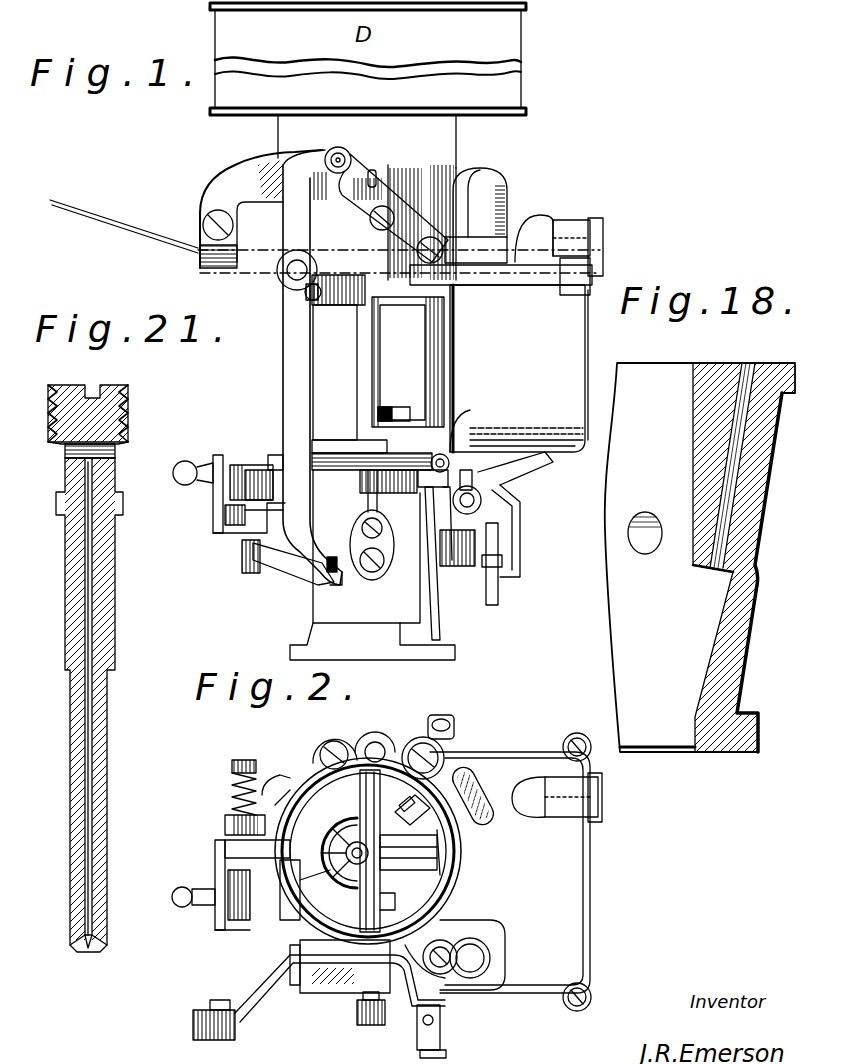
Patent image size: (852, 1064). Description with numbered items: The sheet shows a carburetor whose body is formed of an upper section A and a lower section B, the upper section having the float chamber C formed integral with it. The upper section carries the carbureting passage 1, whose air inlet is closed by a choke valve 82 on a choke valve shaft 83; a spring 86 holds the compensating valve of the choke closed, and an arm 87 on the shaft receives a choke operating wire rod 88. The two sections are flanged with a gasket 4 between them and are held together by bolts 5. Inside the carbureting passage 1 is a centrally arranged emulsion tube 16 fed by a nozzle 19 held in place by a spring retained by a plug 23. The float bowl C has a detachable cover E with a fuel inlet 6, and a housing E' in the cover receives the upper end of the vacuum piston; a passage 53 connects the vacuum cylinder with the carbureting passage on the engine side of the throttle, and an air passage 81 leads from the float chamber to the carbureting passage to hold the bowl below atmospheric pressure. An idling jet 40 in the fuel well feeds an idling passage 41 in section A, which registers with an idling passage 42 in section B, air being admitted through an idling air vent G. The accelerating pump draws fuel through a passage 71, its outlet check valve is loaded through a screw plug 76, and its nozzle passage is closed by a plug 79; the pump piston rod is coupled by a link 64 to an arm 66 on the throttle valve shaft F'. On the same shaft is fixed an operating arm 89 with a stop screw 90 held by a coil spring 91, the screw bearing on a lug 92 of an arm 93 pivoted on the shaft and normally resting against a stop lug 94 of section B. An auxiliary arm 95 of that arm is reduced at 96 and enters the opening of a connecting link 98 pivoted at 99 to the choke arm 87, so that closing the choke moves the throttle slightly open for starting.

In FIG. 2, the carbureting passage 1 is at (368, 851).
In FIG. 1, the gasket 4 is at (328, 455).
In FIG. 1, the bolts 5 is at (392, 407).
In FIG. 2, the bolts 5 is at (320, 760).
In FIG. 1, the fuel inlet 6 is at (577, 237).
In FIG. 2, the fuel inlet 6 is at (575, 794).
In FIG. 2, the emulsion tube 16 is at (348, 836).
In FIG. 2, the nozzle 19 is at (340, 878).
In FIG. 1, the plug 23 is at (545, 470).
In FIG. 21, the idling jet 40 is at (110, 594).
In FIG. 1, the idling passage 41 is at (383, 290).
In FIG. 2, the idling passage 41 is at (425, 978).
In FIG. 1, the idling passage 42 is at (370, 344).
In FIG. 18, the passage 53 is at (716, 575).
In FIG. 1, the link 64 is at (521, 528).
In FIG. 1, the arm 66 is at (506, 580).
In FIG. 1, the passage 71 is at (462, 517).
In FIG. 2, the screw plug 76 is at (418, 748).
In FIG. 2, the plug 79 is at (442, 728).
In FIG. 2, the air passage 81 is at (420, 812).
In FIG. 2, the choke valve 82 is at (367, 893).
In FIG. 1, the choke valve shaft 83 is at (374, 172).
In FIG. 2, the choke valve shaft 83 is at (368, 790).
In FIG. 2, the spring 86 is at (386, 908).
In FIG. 1, the arm 87 is at (405, 198).
In FIG. 2, the arm 87 is at (393, 1010).
In FIG. 1, the choke operating wire rod 88 is at (118, 226).
In FIG. 1, the operating arm 89 is at (212, 500).
In FIG. 2, the operating arm 89 is at (214, 890).
In FIG. 2, the stop screw 90 is at (243, 775).
In FIG. 1, the coil spring 91 is at (323, 580).
In FIG. 2, the coil spring 91 is at (238, 790).
In FIG. 1, the lug 92 is at (238, 466).
In FIG. 2, the lug 92 is at (228, 824).
In FIG. 1, the arm 93 is at (240, 508).
In FIG. 2, the arm 93 is at (262, 790).
In FIG. 1, the stop lug 94 is at (250, 462).
In FIG. 2, the stop lug 94 is at (226, 846).
In FIG. 1, the auxiliary arm 95 is at (292, 570).
In FIG. 1, the reduced portion 96 is at (330, 580).
In FIG. 1, the connecting link 98 is at (300, 380).
In FIG. 2, the connecting link 98 is at (283, 990).
In FIG. 1, the pivot connection 99 is at (338, 148).
In FIG. 2, the pivot connection 99 is at (342, 988).
In FIG. 1, the upper section A is at (335, 372).
In FIG. 2, the upper section A is at (275, 790).
In FIG. 1, the lower section B is at (372, 565).
In FIG. 18, the lower section B is at (700, 557).
In FIG. 1, the float chamber C is at (519, 368).
In FIG. 2, the float chamber C is at (592, 870).
In FIG. 1, the cover E is at (534, 220).
In FIG. 2, the cover E is at (535, 862).
In FIG. 1, the housing E' is at (509, 207).
In FIG. 2, the housing E' is at (492, 954).
In FIG. 1, the throttle valve shaft F' is at (446, 555).
In FIG. 1, the idling air vent G is at (297, 296).